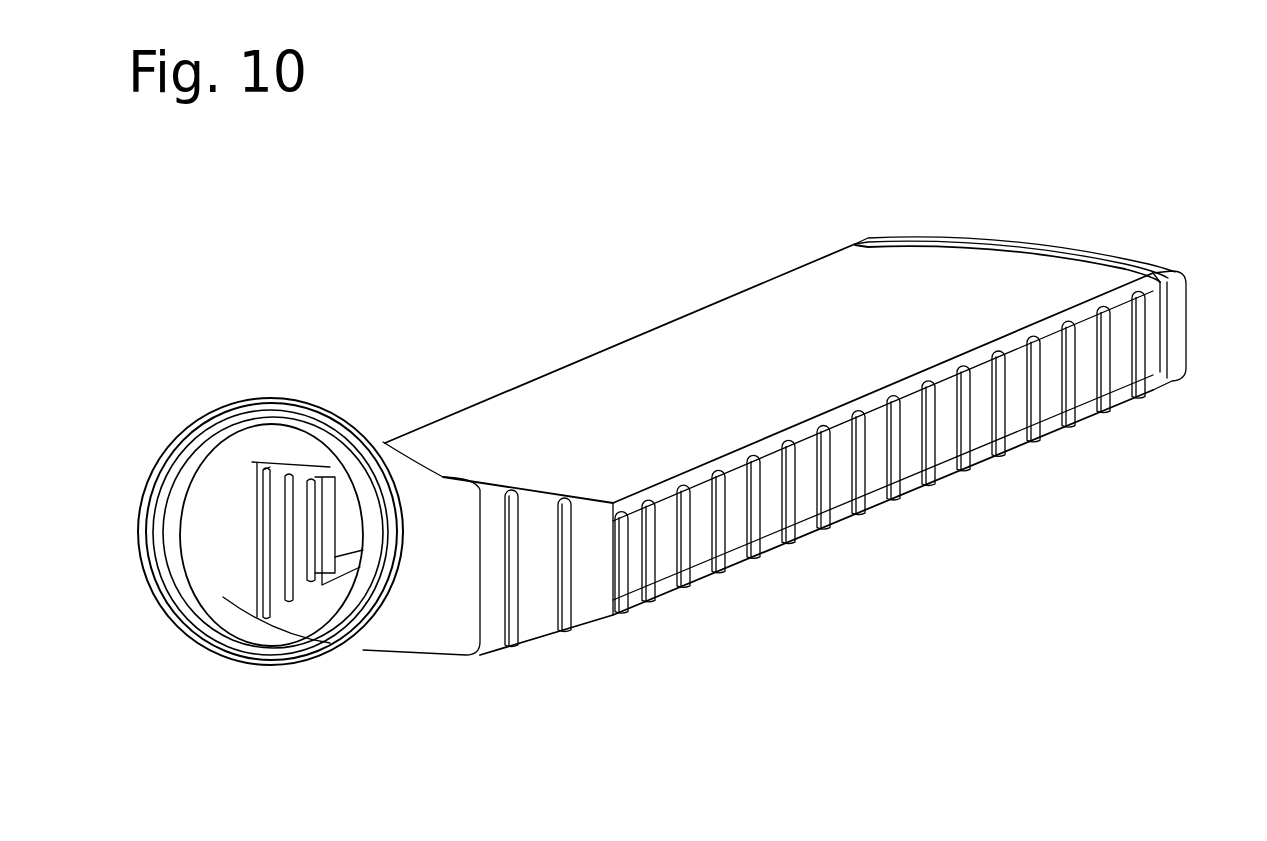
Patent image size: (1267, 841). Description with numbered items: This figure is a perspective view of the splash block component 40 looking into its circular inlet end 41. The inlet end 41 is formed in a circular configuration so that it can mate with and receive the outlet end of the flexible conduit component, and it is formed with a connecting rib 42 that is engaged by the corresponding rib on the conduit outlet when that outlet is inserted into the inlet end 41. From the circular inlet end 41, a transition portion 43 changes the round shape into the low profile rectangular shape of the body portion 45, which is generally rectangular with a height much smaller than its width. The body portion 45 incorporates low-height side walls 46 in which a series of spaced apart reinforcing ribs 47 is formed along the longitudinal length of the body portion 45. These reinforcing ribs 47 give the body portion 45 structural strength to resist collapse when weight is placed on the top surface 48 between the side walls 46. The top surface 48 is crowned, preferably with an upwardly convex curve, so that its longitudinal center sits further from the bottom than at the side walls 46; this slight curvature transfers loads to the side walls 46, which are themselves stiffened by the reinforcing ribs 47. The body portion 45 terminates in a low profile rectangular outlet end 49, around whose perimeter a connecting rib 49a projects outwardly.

The splash block component 40 is at (845, 158).
The inlet end 41 is at (243, 667).
The connecting rib 42 is at (352, 627).
The transition portion 43 is at (425, 497).
The body portion 45 is at (700, 322).
The side walls 46 is at (877, 477).
The reinforcing ribs 47 is at (786, 505).
The top surface 48 is at (865, 300).
The outlet end 49 is at (992, 237).
The connecting rib 49a is at (1100, 253).